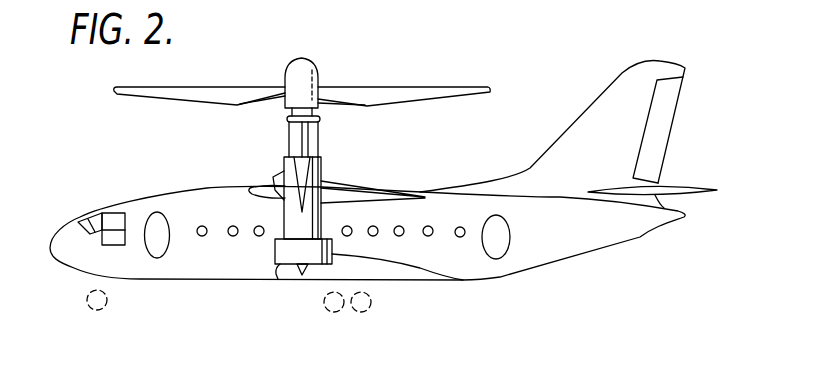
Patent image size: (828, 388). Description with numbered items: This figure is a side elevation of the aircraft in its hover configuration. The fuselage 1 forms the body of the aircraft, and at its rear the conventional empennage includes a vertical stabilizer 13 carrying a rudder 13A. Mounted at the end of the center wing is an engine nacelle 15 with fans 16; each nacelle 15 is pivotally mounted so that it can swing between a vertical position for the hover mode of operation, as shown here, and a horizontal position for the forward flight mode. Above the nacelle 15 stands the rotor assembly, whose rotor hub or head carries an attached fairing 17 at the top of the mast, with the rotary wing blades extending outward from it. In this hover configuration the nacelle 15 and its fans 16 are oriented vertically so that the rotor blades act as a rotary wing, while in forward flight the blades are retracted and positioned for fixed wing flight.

The fuselage 1 is at (625, 230).
The vertical stabilizer 13 is at (620, 85).
The rudder 13A is at (648, 130).
The engine nacelle 15 is at (290, 208).
The fans 16 is at (275, 250).
The fairing 17 is at (312, 70).